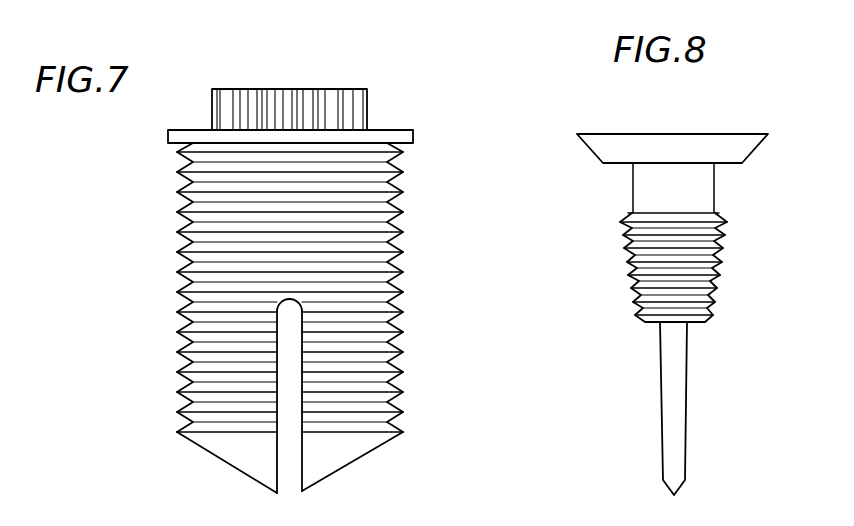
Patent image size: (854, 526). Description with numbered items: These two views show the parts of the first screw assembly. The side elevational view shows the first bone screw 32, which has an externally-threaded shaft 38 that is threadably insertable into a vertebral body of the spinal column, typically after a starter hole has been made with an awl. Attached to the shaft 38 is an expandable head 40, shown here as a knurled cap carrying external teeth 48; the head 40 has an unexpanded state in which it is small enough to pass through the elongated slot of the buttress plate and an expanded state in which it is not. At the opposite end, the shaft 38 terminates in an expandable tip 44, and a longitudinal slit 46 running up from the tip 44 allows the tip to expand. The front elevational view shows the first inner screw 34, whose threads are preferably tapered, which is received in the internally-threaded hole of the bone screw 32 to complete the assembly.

In FIG. 7, the first bone screw 32 is at (261, 252).
In FIG. 7, the expandable head 40 is at (229, 78).
In FIG. 7, the external teeth 48 is at (325, 103).
In FIG. 7, the shaft 38 is at (187, 238).
In FIG. 7, the expandable tip 44 is at (363, 462).
In FIG. 7, the longitudinal slit 46 is at (292, 483).
In FIG. 8, the first inner screw 34 is at (603, 112).